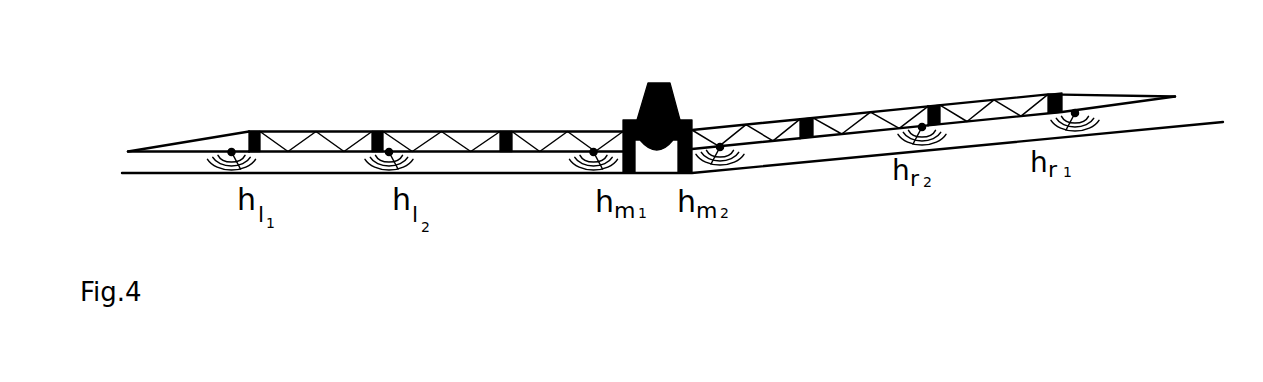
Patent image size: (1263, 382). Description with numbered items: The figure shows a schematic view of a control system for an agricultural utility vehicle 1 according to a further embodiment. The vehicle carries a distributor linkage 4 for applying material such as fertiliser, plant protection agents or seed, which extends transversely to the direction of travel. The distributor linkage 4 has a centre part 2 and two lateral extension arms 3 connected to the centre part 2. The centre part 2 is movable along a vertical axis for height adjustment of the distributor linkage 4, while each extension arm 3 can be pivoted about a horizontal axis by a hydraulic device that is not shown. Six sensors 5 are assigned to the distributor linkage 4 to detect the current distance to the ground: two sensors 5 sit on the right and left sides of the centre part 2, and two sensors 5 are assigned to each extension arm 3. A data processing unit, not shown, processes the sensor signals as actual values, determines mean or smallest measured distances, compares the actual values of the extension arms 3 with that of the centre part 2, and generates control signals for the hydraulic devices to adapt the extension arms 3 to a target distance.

The agricultural utility vehicle 1 is at (670, 87).
The centre part 2 is at (694, 131).
The extension arms 3 is at (407, 130).
The distributor linkage 4 is at (1027, 95).
The sensors 5 is at (231, 153).